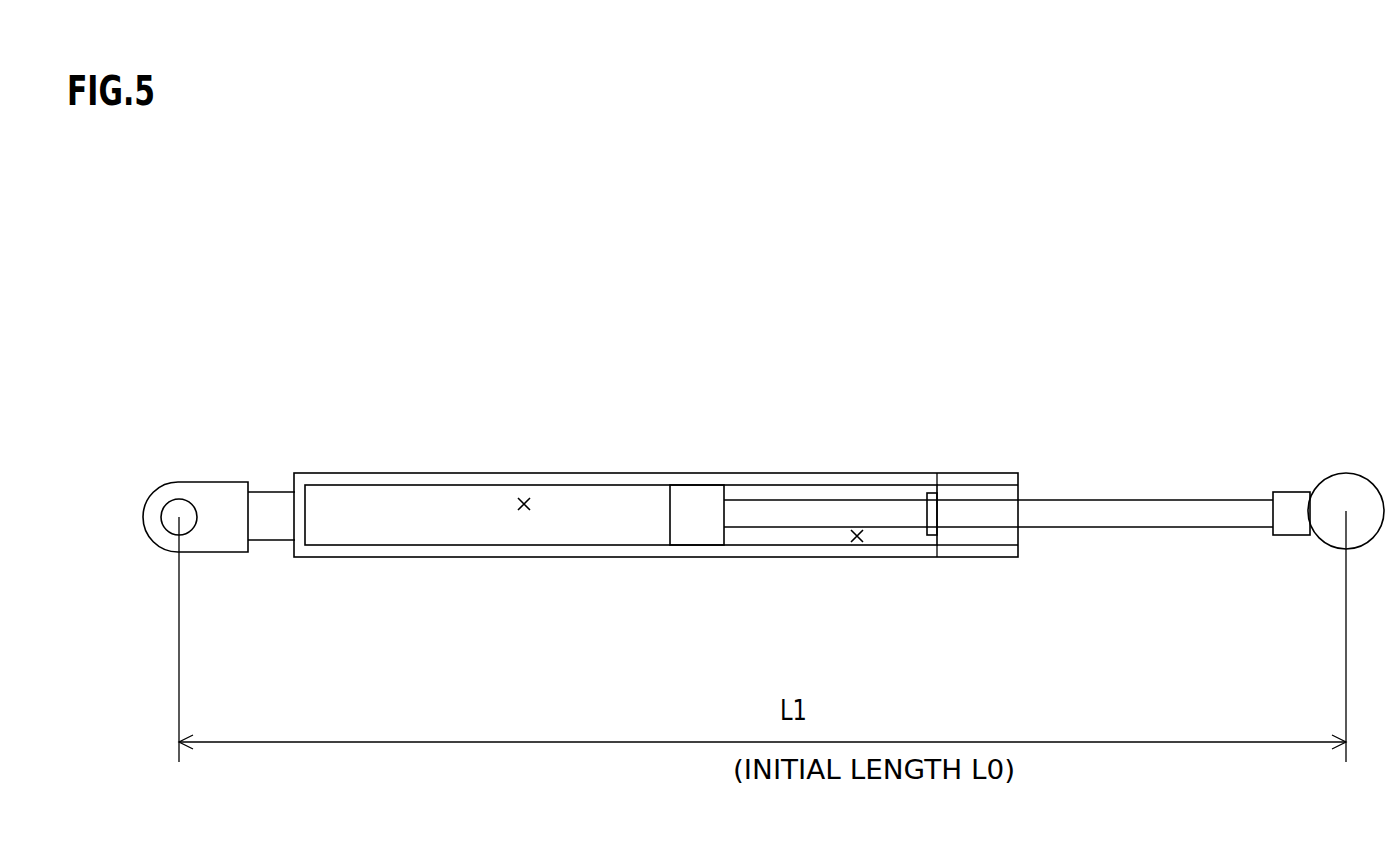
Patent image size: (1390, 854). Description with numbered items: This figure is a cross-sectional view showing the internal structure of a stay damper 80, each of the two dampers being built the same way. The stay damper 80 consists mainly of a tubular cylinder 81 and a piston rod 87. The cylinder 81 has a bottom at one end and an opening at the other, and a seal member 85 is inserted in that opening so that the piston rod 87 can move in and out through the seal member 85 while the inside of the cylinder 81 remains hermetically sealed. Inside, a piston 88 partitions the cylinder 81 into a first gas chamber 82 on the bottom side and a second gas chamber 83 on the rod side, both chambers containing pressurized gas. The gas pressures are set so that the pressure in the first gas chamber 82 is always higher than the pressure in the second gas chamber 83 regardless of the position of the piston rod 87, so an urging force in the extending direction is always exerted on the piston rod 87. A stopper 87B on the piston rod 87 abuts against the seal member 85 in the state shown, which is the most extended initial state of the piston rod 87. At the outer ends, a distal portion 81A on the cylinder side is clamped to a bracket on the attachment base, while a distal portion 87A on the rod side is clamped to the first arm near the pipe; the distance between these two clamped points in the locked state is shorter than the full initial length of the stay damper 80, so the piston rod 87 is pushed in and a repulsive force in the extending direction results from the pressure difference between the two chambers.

The stay damper 80 is at (1013, 323).
The tubular cylinder 81 is at (623, 481).
The distal portion on the cylinder side 81A is at (210, 493).
The first gas chamber 82 is at (525, 496).
The second gas chamber 83 is at (858, 548).
The seal member 85 is at (969, 489).
The piston rod 87 is at (1112, 512).
The distal portion on the rod side 87A is at (1351, 490).
The stopper 87B is at (932, 540).
The piston 88 is at (698, 498).